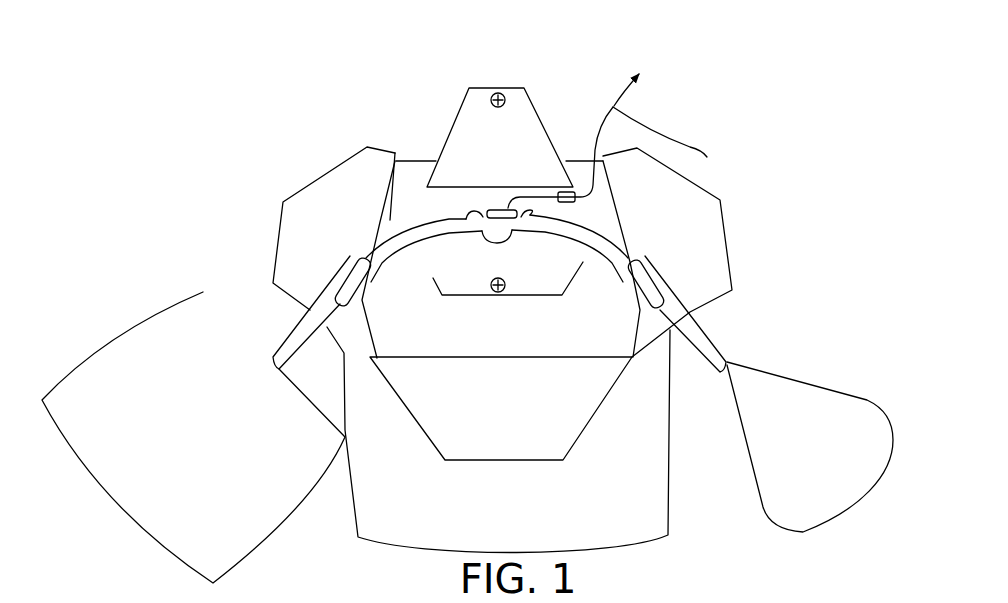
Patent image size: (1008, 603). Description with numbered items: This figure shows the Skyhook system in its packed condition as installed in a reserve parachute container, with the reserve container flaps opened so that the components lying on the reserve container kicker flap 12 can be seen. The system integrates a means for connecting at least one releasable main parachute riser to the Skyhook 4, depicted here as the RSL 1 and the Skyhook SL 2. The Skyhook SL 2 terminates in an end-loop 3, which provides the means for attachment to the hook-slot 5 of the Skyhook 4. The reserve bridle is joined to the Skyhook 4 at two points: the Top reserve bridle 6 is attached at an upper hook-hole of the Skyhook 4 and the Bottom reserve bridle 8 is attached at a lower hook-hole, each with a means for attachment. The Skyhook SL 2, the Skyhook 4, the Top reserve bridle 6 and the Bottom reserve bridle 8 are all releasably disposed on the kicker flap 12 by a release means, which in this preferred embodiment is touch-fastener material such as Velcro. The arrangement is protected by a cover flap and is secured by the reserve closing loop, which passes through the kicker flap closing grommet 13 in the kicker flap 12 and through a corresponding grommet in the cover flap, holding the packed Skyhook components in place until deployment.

The RSL 1 is at (627, 67).
The Skyhook SL 2 is at (585, 141).
The end-loop 3 is at (523, 207).
The Skyhook 4 is at (491, 245).
The hook-slot 5 is at (476, 202).
The Top reserve bridle 6 is at (616, 286).
The Bottom reserve bridle 8 is at (424, 214).
The reserve container kicker flap 12 is at (412, 210).
The kicker flap closing grommet 13 is at (484, 290).